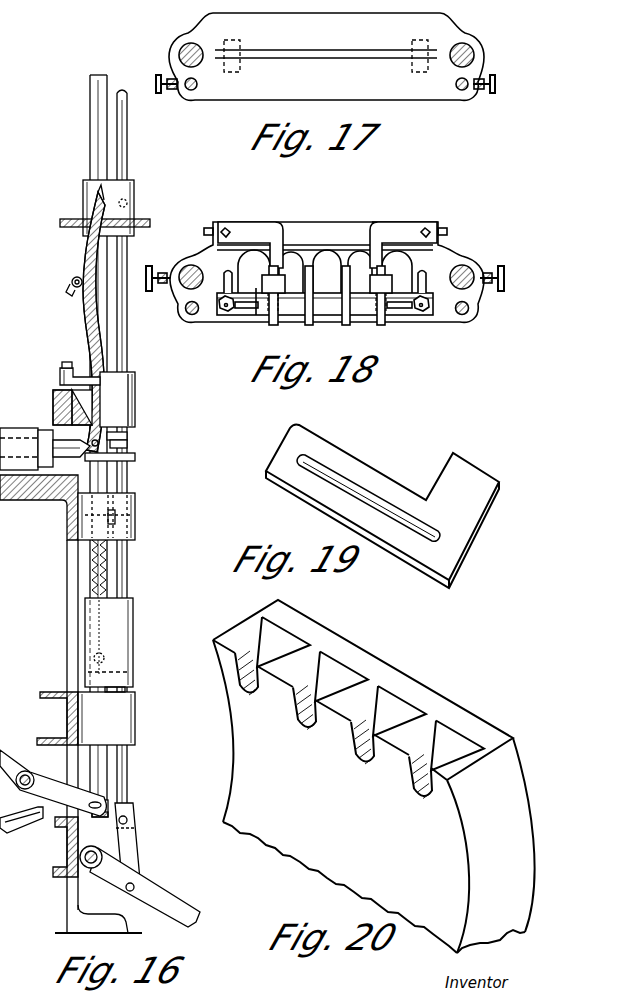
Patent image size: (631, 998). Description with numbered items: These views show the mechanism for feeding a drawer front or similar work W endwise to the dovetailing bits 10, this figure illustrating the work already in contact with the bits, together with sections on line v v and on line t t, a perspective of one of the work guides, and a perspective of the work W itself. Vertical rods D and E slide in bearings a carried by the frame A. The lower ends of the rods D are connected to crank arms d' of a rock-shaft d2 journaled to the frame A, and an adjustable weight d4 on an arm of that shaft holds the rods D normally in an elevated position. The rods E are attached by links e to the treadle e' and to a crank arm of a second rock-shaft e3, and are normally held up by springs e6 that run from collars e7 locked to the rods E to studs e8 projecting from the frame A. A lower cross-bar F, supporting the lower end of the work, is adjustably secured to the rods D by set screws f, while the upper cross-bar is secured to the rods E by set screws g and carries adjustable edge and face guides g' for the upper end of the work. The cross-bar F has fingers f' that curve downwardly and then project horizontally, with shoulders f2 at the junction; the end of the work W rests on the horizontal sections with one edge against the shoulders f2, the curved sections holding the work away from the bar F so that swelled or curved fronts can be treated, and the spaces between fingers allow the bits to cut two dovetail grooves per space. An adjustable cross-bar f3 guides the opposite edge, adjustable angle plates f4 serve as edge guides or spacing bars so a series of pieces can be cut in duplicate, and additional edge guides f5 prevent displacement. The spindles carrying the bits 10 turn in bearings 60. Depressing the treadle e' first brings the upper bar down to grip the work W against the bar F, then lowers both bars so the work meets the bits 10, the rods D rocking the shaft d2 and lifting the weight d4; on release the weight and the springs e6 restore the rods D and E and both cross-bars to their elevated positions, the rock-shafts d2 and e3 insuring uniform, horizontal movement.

In FIG. 16, the vertical rod D is at (88, 134).
In FIG. 17, the vertical rod D is at (180, 46).
In FIG. 18, the vertical rod D is at (191, 265).
In FIG. 16, the vertical rod E is at (129, 142).
In FIG. 17, the vertical rod E is at (191, 92).
In FIG. 18, the vertical rod E is at (188, 314).
In FIG. 16, the set screw g is at (123, 208).
In FIG. 17, the set screw g is at (308, 93).
In FIG. 18, the set screw g is at (150, 196).
In FIG. 16, the cross head C is at (60, 223).
In FIG. 17, the cross head C is at (412, 102).
In FIG. 16, the section line v v is at (0, 128).
In FIG. 16, the section line t t is at (0, 290).
In FIG. 16, the edge and face guide g' is at (60, 288).
In FIG. 16, the work W is at (82, 316).
In FIG. 20, the work W is at (352, 640).
In FIG. 16, the cross-bar F is at (53, 400).
In FIG. 18, the cross-bar F is at (334, 212).
In FIG. 18, the set screw f is at (325, 289).
In FIG. 16, the finger f' is at (128, 461).
In FIG. 18, the finger f' is at (346, 311).
In FIG. 16, the shoulder f2 is at (88, 460).
In FIG. 18, the shoulder f2 is at (333, 265).
In FIG. 16, the adjustable cross-bar f3 is at (138, 449).
In FIG. 18, the adjustable cross-bar f3 is at (294, 322).
In FIG. 16, the angle plate f4 is at (158, 420).
In FIG. 18, the angle plate f4 is at (395, 282).
In FIG. 19, the angle plate f4 is at (440, 470).
In FIG. 16, the edge guide f5 is at (62, 381).
In FIG. 18, the edge guide f5 is at (258, 226).
In FIG. 16, the bearing 60 is at (15, 407).
In FIG. 16, the dovetailing bit 10 is at (58, 474).
In FIG. 16, the bearing a is at (136, 514).
In FIG. 16, the stud e8 is at (115, 518).
In FIG. 16, the spring e6 is at (103, 580).
In FIG. 16, the collar e7 is at (134, 640).
In FIG. 16, the frame A is at (46, 690).
In FIG. 16, the crank arm d' is at (53, 783).
In FIG. 16, the rock-shaft d2 is at (27, 770).
In FIG. 16, the adjustable weight d4 is at (9, 729).
In FIG. 16, the link e is at (138, 841).
In FIG. 16, the treadle e' is at (100, 867).
In FIG. 16, the rock-shaft e3 is at (84, 868).